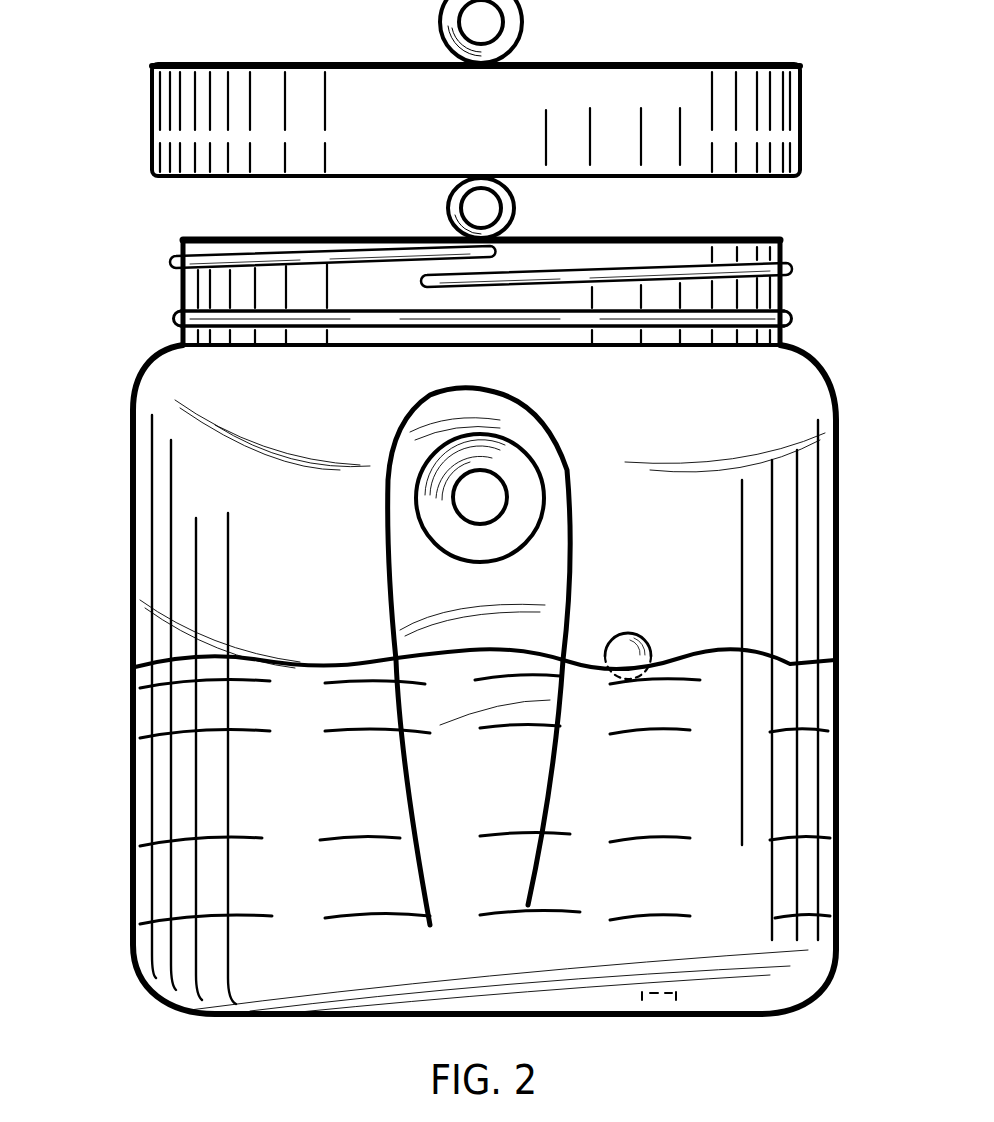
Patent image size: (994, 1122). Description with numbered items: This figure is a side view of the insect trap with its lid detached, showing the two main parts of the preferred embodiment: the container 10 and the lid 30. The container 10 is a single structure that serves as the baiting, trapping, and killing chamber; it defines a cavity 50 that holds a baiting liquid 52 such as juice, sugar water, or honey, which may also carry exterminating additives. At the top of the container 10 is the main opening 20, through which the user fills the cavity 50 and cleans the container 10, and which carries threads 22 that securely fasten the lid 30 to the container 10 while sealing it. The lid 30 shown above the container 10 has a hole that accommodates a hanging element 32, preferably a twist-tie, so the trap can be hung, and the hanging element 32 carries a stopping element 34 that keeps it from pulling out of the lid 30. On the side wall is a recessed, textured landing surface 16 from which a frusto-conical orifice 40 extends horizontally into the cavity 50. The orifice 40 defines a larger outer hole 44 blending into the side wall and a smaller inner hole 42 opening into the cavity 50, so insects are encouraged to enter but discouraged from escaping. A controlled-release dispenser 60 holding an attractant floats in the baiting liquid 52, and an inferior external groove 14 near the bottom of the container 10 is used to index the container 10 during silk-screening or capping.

The container 10 is at (834, 376).
The inferior external groove 14 is at (668, 990).
The landing surface 16 is at (386, 553).
The main opening 20 is at (766, 240).
The threads 22 is at (176, 262).
The lid 30 is at (152, 128).
The hanging element 32 is at (440, 6).
The stopping element 34 is at (452, 222).
The frusto-conical orifice 40 is at (518, 462).
The inner hole 42 is at (497, 495).
The outer hole 44 is at (419, 476).
The cavity 50 is at (205, 470).
The baiting liquid 52 is at (356, 658).
The controlled-release dispenser 60 is at (618, 628).